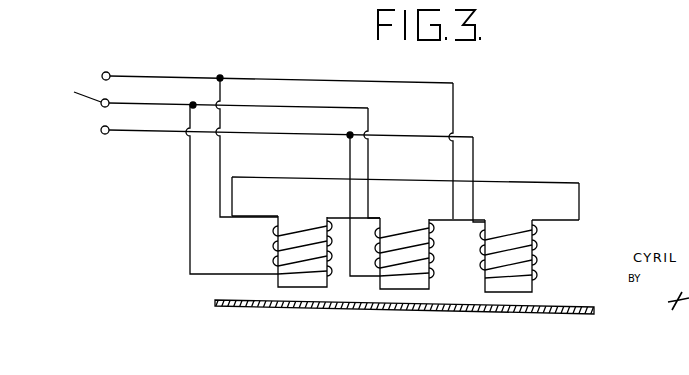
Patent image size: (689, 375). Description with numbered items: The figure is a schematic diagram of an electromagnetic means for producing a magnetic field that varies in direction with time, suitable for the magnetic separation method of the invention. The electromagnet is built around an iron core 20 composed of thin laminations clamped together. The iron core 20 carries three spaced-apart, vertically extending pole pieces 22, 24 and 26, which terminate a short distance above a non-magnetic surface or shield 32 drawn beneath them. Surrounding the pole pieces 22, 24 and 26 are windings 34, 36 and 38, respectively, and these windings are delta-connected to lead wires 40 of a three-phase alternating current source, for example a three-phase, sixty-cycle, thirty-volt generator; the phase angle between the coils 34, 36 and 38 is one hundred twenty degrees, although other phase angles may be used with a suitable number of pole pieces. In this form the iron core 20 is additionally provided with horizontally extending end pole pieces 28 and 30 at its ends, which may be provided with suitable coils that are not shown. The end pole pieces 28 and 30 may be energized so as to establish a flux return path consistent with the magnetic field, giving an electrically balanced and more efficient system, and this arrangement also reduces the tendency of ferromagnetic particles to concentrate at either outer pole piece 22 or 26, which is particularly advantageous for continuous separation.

The iron core 20 is at (572, 163).
The pole piece 22 is at (278, 284).
The pole piece 24 is at (380, 285).
The pole piece 26 is at (485, 289).
The end pole piece 28 is at (580, 196).
The end pole piece 30 is at (246, 177).
The non-magnetic surface or shield 32 is at (215, 302).
The winding 34 is at (272, 244).
The winding 36 is at (374, 248).
The winding 38 is at (540, 262).
The lead wires 40 is at (102, 78).